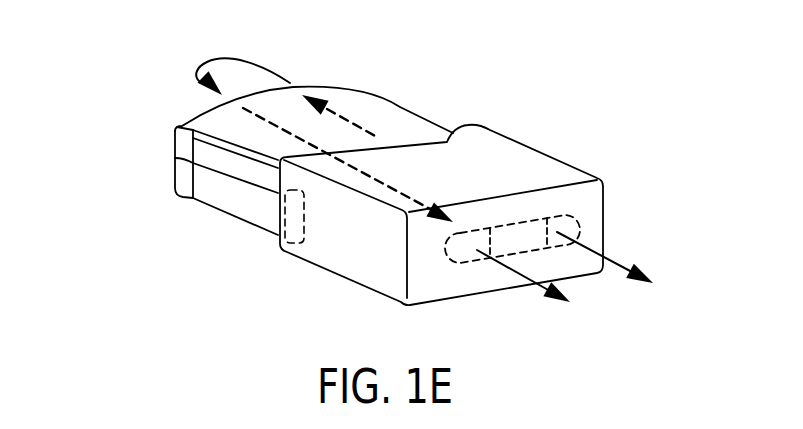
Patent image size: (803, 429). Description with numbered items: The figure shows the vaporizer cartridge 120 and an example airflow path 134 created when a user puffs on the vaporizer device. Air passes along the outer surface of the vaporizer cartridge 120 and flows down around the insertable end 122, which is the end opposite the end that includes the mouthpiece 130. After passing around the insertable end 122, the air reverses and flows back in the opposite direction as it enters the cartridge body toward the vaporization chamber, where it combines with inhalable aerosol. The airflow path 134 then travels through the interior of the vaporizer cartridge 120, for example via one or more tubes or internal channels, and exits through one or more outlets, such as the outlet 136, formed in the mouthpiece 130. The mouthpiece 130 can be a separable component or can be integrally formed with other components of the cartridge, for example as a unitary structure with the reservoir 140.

The vaporizer cartridge 120 is at (448, 81).
The insertable end 122 is at (158, 167).
The mouthpiece 130 is at (542, 174).
The airflow path 134 is at (395, 187).
The outlet 136 is at (463, 258).
The reservoir 140 is at (258, 185).